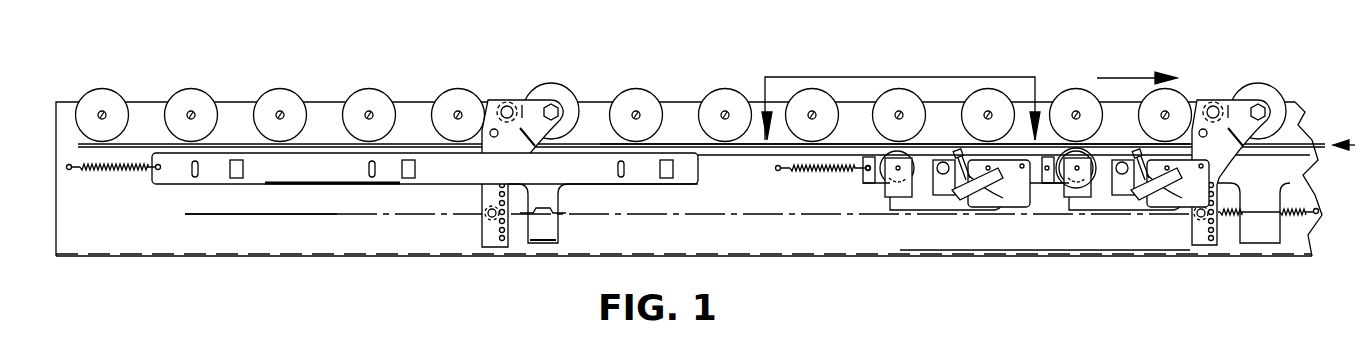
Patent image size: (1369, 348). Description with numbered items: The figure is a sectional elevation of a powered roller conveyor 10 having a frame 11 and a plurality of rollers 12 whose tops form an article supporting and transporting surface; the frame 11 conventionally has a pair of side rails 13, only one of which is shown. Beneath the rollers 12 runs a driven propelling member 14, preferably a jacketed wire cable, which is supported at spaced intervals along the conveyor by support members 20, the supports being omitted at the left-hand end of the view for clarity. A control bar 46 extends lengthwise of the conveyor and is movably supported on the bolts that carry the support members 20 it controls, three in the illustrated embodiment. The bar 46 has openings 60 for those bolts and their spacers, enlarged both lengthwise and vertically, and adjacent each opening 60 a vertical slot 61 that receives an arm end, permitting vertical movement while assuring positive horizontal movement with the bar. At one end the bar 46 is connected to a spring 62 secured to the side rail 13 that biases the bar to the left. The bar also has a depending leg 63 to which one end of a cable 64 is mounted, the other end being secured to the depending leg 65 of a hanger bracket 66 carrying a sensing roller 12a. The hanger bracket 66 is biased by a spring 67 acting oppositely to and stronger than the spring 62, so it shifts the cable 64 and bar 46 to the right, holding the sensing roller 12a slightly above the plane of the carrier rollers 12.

The conveyor 10 is at (925, 60).
The frame 11 is at (997, 258).
The rollers 12 is at (722, 92).
The sensing roller 12a is at (567, 92).
The side rails 13 is at (932, 250).
The driven propelling member 14 is at (845, 143).
The support members 20 is at (891, 218).
The control bar 46 is at (262, 188).
The openings 60 is at (237, 160).
The vertical slot 61 is at (194, 178).
The spring 62 is at (110, 173).
The depending leg 63 is at (550, 234).
The cable 64 is at (278, 216).
The depending leg 65 is at (497, 240).
The hanger bracket 66 is at (508, 100).
The spring 67 is at (1228, 215).